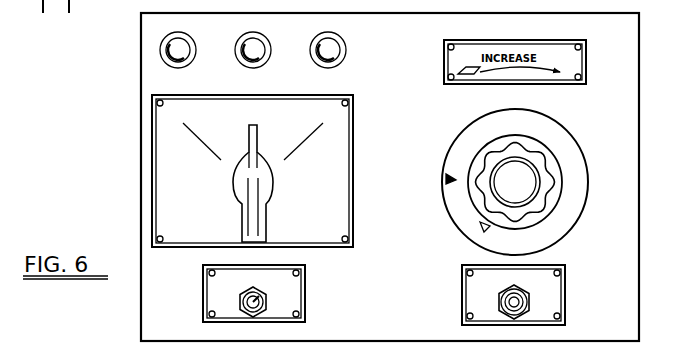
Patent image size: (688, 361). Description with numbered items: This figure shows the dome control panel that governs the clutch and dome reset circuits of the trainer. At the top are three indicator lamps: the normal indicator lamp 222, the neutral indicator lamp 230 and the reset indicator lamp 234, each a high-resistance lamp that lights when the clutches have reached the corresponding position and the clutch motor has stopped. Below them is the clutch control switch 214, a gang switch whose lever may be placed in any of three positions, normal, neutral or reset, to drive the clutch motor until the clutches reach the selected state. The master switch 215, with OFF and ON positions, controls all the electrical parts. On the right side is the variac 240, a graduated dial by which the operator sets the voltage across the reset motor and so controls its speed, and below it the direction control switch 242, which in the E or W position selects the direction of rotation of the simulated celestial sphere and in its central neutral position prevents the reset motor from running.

The clutch control switch 214 is at (175, 176).
The master switch 215 is at (201, 303).
The normal indicator lamp 222 is at (183, 44).
The neutral indicator lamp 230 is at (258, 44).
The reset indicator lamp 234 is at (333, 44).
The variac 240 is at (446, 177).
The direction control switch 242 is at (567, 304).